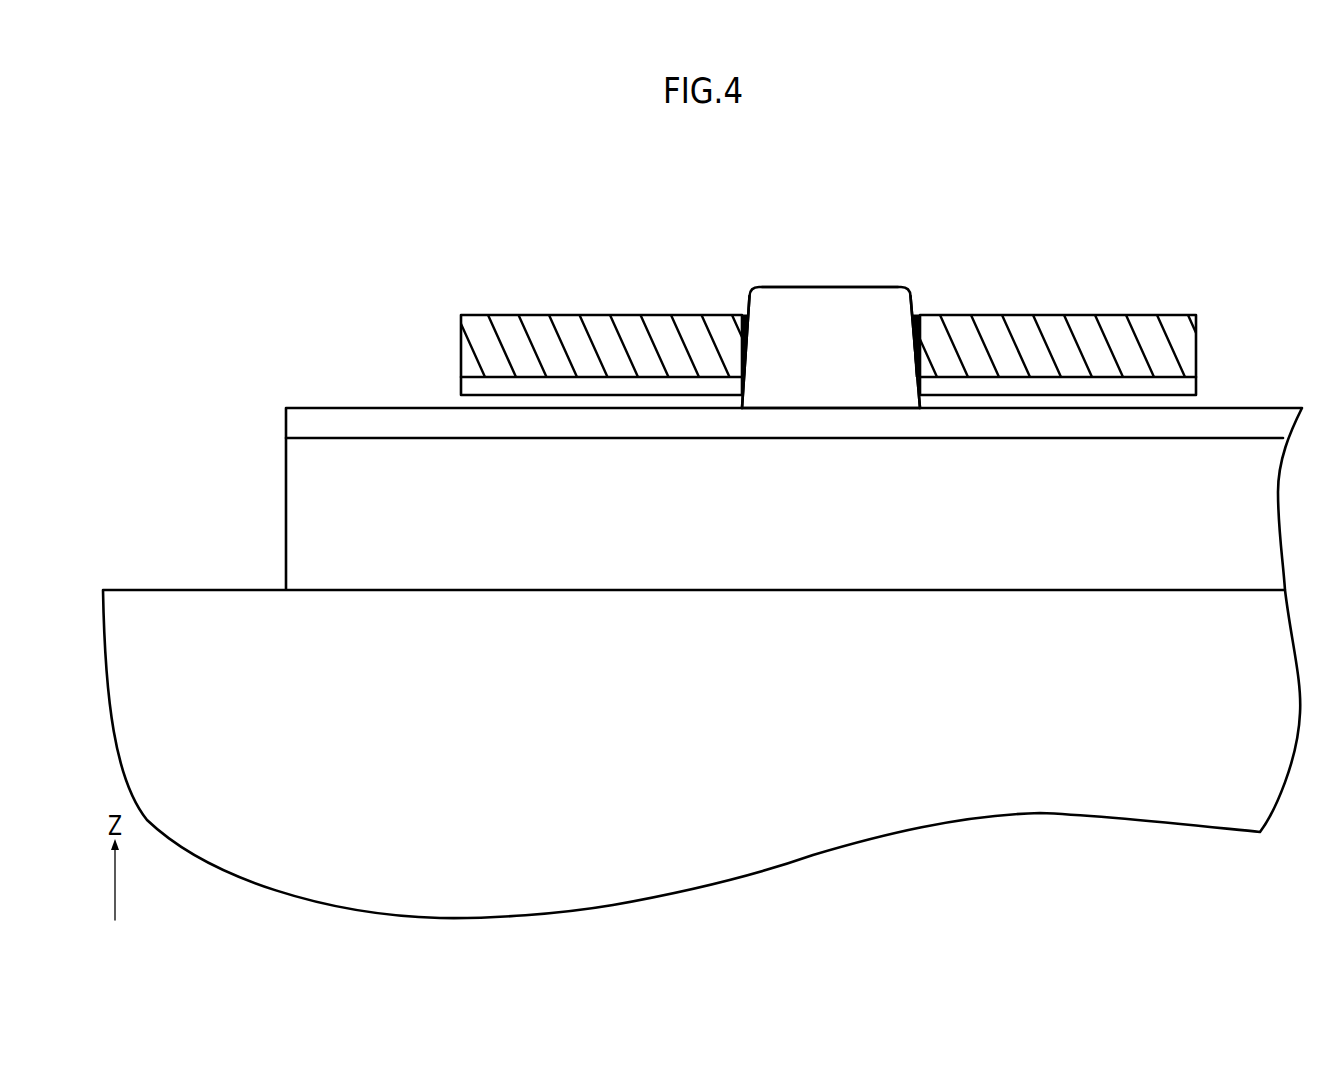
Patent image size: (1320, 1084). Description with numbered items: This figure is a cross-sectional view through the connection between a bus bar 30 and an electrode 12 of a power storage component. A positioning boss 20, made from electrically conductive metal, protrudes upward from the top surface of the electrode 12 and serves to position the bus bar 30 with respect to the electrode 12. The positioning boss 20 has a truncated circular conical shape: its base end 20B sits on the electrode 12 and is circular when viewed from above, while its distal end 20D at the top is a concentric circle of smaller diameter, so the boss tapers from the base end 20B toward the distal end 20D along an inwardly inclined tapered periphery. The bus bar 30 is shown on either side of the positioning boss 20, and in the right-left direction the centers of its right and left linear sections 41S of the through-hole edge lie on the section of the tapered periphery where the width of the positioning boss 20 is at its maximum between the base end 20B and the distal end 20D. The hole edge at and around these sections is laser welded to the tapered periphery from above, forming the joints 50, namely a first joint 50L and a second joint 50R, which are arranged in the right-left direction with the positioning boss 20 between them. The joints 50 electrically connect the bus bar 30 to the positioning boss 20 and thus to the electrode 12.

The electrode 12 is at (380, 407).
The positioning boss 20 is at (787, 282).
The distal end 20D is at (832, 287).
The base end 20B is at (782, 408).
The bus bar 30 is at (510, 313).
The linear sections 41S is at (744, 375).
The joints 50 is at (852, 278).
The second joint 50R is at (746, 315).
The first joint 50L is at (916, 315).